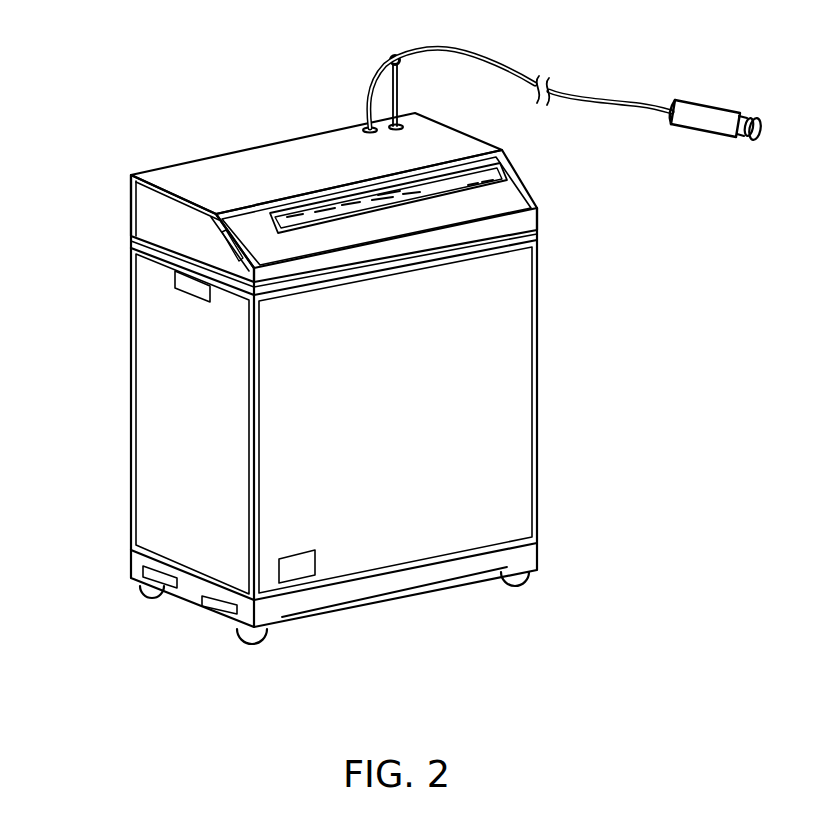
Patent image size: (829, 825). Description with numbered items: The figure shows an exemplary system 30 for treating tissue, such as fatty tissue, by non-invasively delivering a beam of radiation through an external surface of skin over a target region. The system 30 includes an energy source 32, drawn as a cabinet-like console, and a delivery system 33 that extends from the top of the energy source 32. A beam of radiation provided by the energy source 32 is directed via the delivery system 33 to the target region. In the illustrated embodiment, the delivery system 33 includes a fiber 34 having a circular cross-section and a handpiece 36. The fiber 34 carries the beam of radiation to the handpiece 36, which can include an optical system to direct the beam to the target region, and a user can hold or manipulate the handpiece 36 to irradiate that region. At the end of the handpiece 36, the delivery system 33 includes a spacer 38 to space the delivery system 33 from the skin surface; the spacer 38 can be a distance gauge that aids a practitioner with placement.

The system 30 is at (98, 66).
The energy source 32 is at (540, 420).
The delivery system 33 is at (647, 142).
The fiber 34 is at (493, 63).
The handpiece 36 is at (700, 108).
The spacer 38 is at (762, 139).